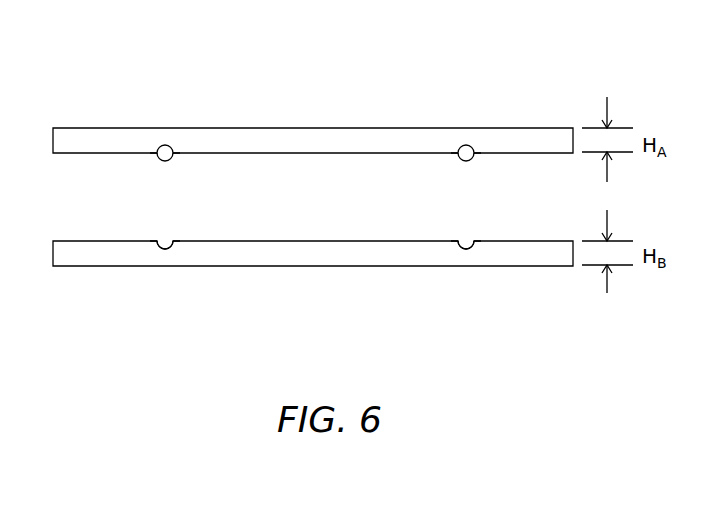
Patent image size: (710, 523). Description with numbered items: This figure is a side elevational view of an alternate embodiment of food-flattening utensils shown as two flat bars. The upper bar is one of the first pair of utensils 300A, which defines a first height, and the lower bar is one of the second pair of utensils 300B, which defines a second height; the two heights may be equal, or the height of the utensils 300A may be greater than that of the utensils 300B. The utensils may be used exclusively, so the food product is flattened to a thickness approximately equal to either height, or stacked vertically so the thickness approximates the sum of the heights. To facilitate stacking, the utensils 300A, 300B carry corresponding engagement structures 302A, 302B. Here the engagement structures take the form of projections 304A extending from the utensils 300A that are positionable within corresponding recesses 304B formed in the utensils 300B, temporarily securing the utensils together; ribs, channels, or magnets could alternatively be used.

The first pair of utensils 300A is at (310, 140).
The second pair of utensils 300B is at (347, 257).
The engagement structure 302A is at (148, 169).
The engagement structure 302B is at (170, 236).
The projection 304A is at (166, 157).
The recess 304B is at (165, 249).